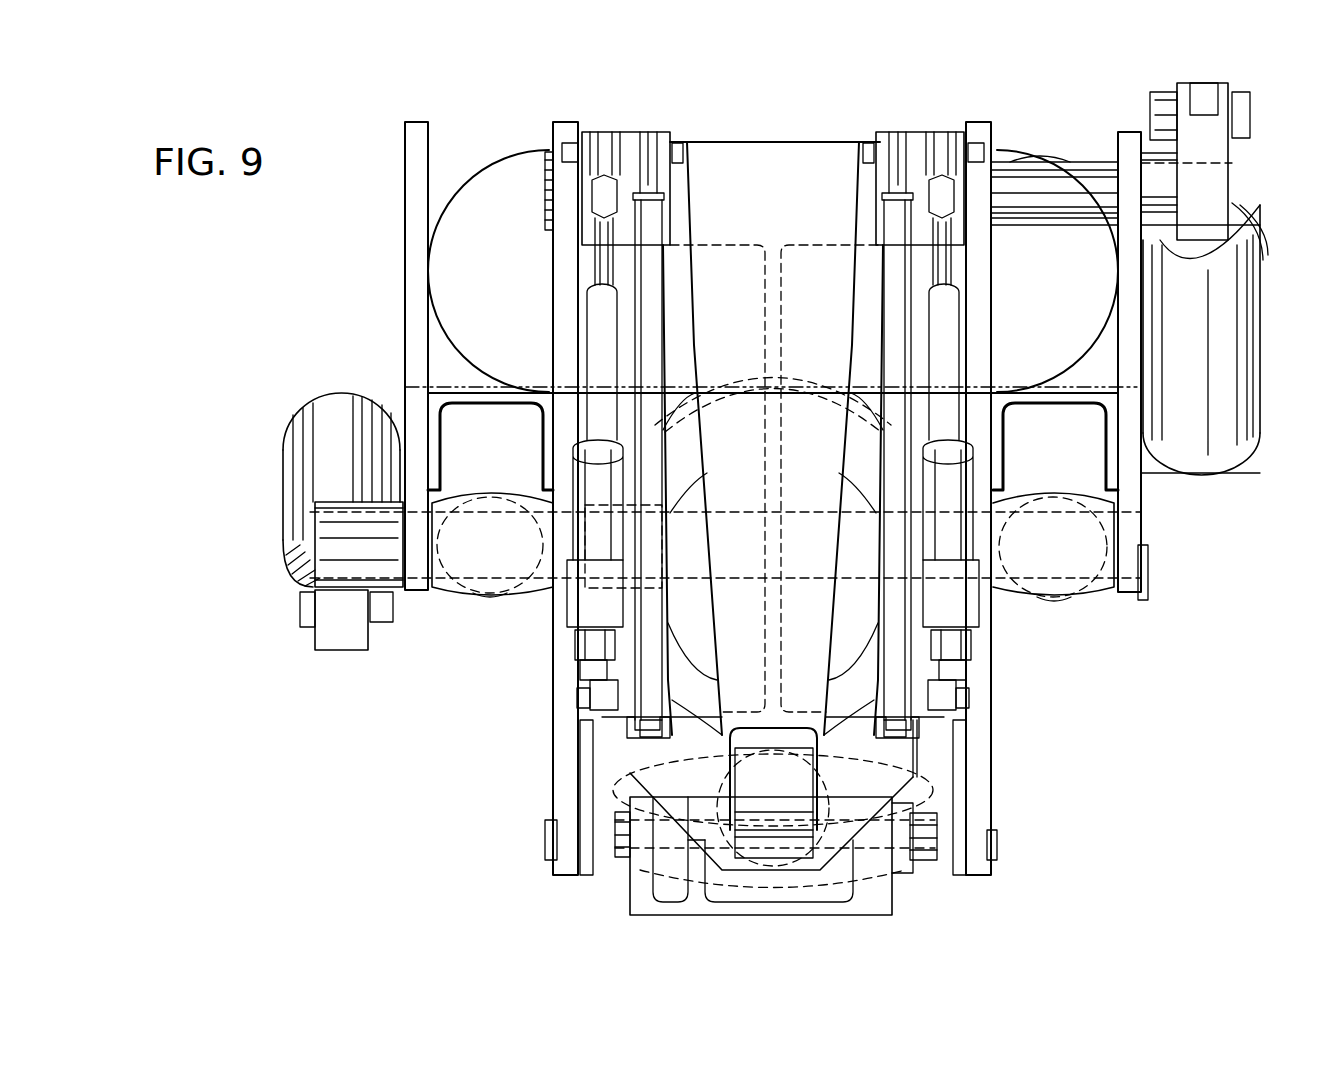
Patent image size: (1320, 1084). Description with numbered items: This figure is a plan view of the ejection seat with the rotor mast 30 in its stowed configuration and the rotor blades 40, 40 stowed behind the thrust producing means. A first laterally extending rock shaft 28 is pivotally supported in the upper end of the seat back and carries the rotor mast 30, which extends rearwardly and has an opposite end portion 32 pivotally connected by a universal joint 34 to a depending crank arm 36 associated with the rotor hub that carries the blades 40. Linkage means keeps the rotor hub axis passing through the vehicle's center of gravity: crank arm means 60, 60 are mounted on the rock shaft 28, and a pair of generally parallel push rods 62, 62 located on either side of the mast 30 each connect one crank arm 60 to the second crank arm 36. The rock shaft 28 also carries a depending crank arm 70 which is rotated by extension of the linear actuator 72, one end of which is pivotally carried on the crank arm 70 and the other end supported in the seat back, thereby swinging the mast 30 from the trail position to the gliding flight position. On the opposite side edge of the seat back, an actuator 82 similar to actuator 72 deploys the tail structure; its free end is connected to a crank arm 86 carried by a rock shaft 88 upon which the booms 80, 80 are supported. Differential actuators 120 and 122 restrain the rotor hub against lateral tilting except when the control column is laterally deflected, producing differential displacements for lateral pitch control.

The first rock shaft 28 is at (1030, 160).
The rotor mast 30 is at (829, 339).
The opposite end portion 32 is at (838, 738).
The universal joint 34 is at (806, 794).
The crank arm 36 is at (897, 777).
The rotor blades 40 is at (622, 775).
The crank arm means 60 is at (627, 132).
The push rods 62 is at (665, 330).
The crank arm 70 is at (1232, 148).
The linear actuator 72 is at (1255, 330).
The booms 80 is at (500, 597).
The actuator 82 is at (405, 333).
The crank arm 86 is at (320, 633).
The rock shaft 88 is at (862, 535).
The differential actuator 120 is at (960, 469).
The differential actuator 122 is at (582, 478).